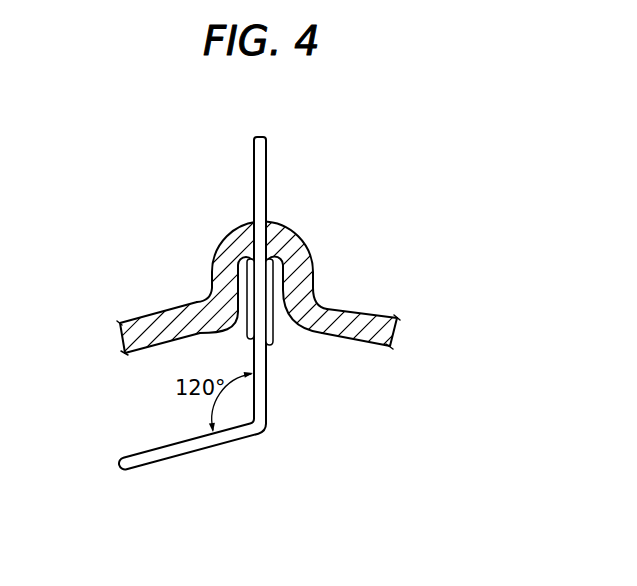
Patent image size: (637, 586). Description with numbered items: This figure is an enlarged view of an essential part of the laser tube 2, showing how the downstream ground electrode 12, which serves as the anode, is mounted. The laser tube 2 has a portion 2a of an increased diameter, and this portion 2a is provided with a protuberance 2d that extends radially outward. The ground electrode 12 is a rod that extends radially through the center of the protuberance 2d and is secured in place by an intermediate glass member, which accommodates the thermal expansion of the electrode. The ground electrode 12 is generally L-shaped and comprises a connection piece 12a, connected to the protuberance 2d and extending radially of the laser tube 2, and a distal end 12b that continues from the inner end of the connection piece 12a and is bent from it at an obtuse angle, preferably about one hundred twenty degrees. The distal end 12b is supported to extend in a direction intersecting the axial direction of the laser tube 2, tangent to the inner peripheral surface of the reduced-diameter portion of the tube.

The laser tube 2 is at (381, 314).
The portion of an increased diameter 2a is at (362, 341).
The protuberance 2d is at (303, 250).
The ground electrode 12 is at (272, 156).
The connection piece 12a is at (267, 375).
The distal end 12b is at (165, 455).